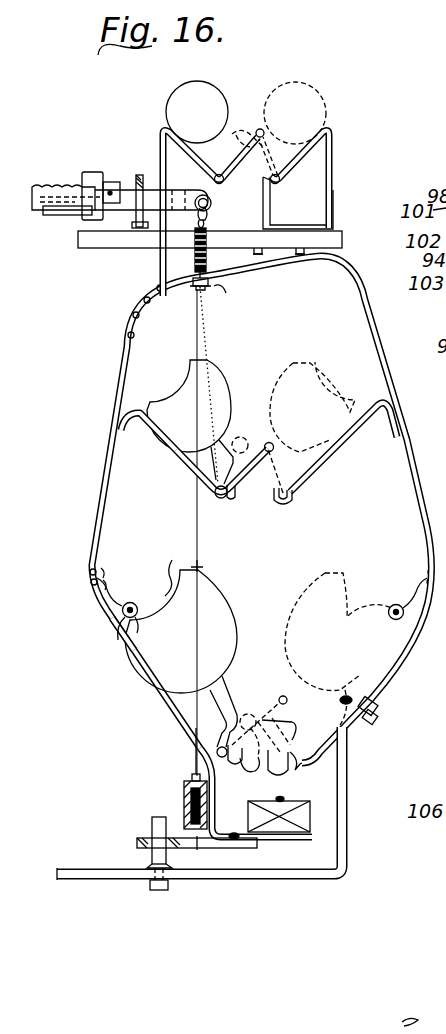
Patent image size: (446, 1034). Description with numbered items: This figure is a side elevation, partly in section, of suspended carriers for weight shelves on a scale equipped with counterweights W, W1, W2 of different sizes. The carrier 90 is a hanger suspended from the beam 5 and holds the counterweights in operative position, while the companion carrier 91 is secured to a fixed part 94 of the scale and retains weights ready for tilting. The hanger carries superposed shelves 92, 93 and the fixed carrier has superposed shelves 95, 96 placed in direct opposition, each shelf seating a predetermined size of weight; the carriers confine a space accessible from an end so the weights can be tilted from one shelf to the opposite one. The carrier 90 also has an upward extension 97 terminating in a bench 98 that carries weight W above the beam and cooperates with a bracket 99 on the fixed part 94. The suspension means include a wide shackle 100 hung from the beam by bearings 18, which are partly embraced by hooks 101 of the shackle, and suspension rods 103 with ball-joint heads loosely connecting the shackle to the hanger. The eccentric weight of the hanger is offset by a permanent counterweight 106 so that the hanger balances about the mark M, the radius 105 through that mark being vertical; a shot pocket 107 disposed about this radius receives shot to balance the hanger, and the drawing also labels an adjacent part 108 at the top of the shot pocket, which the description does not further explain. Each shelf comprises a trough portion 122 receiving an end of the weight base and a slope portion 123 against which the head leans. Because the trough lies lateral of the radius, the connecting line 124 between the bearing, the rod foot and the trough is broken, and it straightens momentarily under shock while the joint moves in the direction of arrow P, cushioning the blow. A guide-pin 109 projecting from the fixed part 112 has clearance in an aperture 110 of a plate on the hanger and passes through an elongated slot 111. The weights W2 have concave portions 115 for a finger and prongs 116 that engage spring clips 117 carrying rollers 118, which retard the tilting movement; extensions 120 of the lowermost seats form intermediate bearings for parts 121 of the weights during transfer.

The beam 5 is at (125, 188).
The bearings 18 is at (213, 203).
The carrier 90 is at (106, 470).
The carrier 91 is at (397, 397).
The shelf 92 is at (206, 485).
The shelf 93 is at (256, 793).
The fixed part 94 is at (343, 244).
The shelf 95 is at (306, 471).
The shelf 96 is at (293, 766).
The upward extension 97 is at (159, 262).
The bench 98 is at (220, 158).
The bracket 99 is at (334, 205).
The shackle 100 is at (207, 268).
The hooks 101 is at (197, 217).
The suspension rods 103 is at (190, 290).
The radius 105 is at (198, 515).
The permanent counterweight 106 is at (312, 795).
The shot pocket 107 is at (185, 790).
The plunger pin 108 is at (193, 774).
The guide-pin 109 is at (156, 816).
The aperture 110 is at (138, 843).
The elongated slot 111 is at (150, 884).
The fixed part 112 is at (263, 875).
The concave portions 115 is at (172, 574).
The prongs 116 is at (203, 566).
The means 117 is at (96, 600).
The roller 118 is at (135, 603).
The extensions 120 is at (252, 775).
The parts 121 is at (249, 745).
The trough portion 122 is at (237, 494).
The slope portion 123 is at (163, 440).
The connecting line 124 is at (206, 222).
The counterweight W is at (214, 92).
The counterweight W1 is at (244, 347).
The counterweight W2 is at (230, 603).
The arrow P is at (221, 293).
The mark M is at (195, 733).